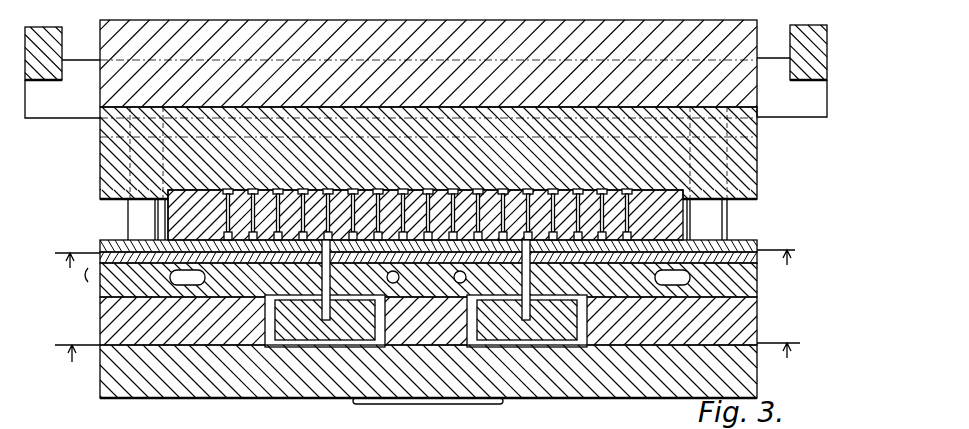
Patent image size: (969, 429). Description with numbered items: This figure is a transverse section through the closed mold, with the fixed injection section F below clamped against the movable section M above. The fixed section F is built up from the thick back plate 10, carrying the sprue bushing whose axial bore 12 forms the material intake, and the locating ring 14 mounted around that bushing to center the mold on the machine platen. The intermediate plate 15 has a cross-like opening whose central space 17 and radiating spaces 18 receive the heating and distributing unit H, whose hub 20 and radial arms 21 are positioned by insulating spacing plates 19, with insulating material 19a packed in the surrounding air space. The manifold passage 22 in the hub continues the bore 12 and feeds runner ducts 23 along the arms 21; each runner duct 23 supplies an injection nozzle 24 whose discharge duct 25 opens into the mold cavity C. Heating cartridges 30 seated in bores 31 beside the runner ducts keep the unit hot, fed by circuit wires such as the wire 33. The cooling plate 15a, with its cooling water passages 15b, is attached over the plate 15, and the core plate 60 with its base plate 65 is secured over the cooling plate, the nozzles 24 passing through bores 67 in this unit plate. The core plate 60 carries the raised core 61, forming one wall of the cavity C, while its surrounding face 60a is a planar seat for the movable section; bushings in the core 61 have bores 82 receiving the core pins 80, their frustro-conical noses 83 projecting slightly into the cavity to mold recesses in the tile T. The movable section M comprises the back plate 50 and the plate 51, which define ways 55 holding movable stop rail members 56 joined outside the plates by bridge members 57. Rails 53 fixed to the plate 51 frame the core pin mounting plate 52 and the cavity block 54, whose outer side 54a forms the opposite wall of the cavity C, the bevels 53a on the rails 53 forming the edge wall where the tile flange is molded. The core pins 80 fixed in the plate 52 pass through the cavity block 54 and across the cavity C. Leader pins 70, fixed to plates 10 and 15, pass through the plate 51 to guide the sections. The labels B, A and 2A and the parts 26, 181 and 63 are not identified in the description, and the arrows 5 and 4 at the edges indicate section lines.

The back plate 50 is at (125, 79).
The ways 55 is at (100, 129).
The transverse bridge members 57 is at (800, 65).
The stop rail member 56 is at (775, 98).
The block or plate 51 is at (115, 166).
The movable section M is at (100, 149).
The rails 53 is at (192, 196).
The bevels 53a is at (202, 192).
The block B is at (368, 163).
The core pin mounting plate 52 is at (251, 192).
The core pins 80 is at (276, 192).
The outer exposed side 54a is at (333, 192).
The cavity block 54 is at (316, 158).
The axial discharge duct 25 is at (350, 232).
The mold cavity C is at (388, 175).
The core 61 is at (418, 192).
The tile component T is at (438, 192).
The frustro-conical noses 83 is at (460, 192).
The bores 82 is at (470, 192).
The section line 2A is at (493, 177).
The bore or opening 67 is at (534, 192).
The pin foot 63 is at (590, 192).
The leader pins 70 is at (707, 222).
The base plate 65 is at (130, 245).
The core plate 60 is at (125, 205).
The outer surrounding face 60a is at (657, 226).
The cooling plate 15a is at (100, 248).
The axial passage or manifold 22 is at (426, 279).
The bushing 181 is at (267, 278).
The axis A is at (302, 285).
The channel 26 is at (496, 271).
The central space 17 is at (496, 285).
The injection nozzle 24 is at (568, 283).
The intermediate plate 15 is at (115, 312).
The cooling water ducts or passages 15b is at (437, 301).
The heating cartridges 30 is at (268, 318).
The bore 31 is at (246, 301).
The spaces 18 is at (324, 325).
The back plate or block 10 is at (112, 398).
The locating ring 14 is at (398, 404).
The axial bore 12 is at (472, 404).
The circuit wire 33 is at (545, 420).
The pillars or spacing plates 19 is at (342, 398).
The heat insulating material 19a is at (344, 416).
The arms 21 is at (263, 353).
The molding material heating and distributing unit H is at (270, 370).
The runner ducts 23 is at (461, 362).
The central body or hub 20 is at (491, 370).
The section line 5 is at (425, 266).
The injection nozzle 4 is at (427, 362).
The fixed injection section F is at (95, 394).